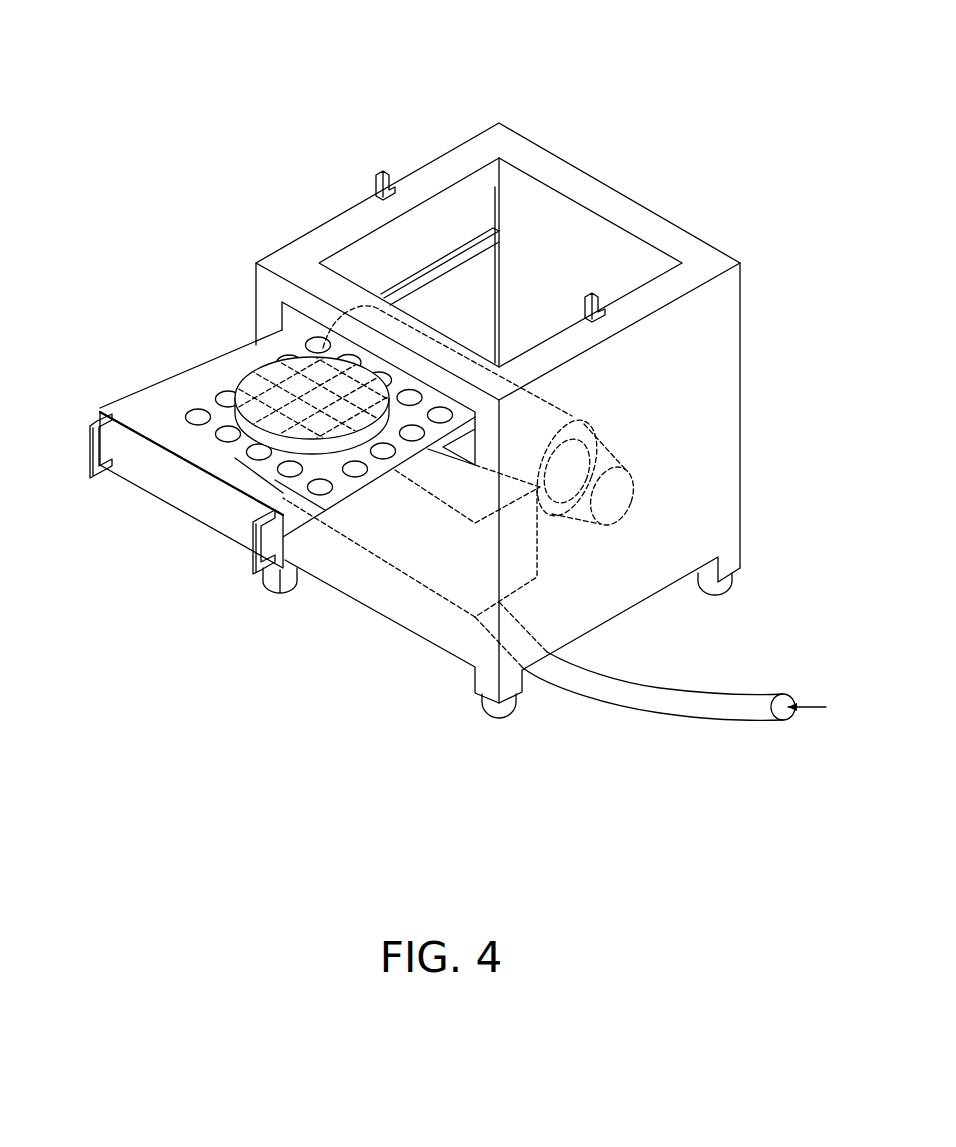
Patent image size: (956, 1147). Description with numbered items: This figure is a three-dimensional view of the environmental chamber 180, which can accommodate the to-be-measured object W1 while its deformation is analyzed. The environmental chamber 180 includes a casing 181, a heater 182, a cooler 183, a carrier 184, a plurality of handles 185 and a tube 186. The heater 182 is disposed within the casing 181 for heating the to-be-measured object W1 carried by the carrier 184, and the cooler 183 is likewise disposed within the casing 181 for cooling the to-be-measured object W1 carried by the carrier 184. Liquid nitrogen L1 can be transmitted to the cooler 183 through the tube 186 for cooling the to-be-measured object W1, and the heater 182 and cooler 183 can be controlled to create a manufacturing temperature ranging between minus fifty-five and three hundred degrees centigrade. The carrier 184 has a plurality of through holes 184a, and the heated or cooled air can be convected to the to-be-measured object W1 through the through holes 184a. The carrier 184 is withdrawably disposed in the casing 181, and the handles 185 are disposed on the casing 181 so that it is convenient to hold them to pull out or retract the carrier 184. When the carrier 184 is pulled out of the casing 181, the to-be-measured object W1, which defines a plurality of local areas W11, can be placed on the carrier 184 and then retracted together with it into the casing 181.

The environmental chamber 180 is at (433, 365).
The casing 181 is at (607, 198).
The heater 182 is at (634, 482).
The cooler 183 is at (540, 571).
The carrier 184 is at (287, 428).
The through holes 184a is at (197, 413).
The handles 185 is at (92, 440).
The tube 186 is at (695, 697).
The to-be-measured object W1 is at (310, 326).
The local areas W11 is at (317, 383).
The liquid nitrogen L1 is at (822, 707).